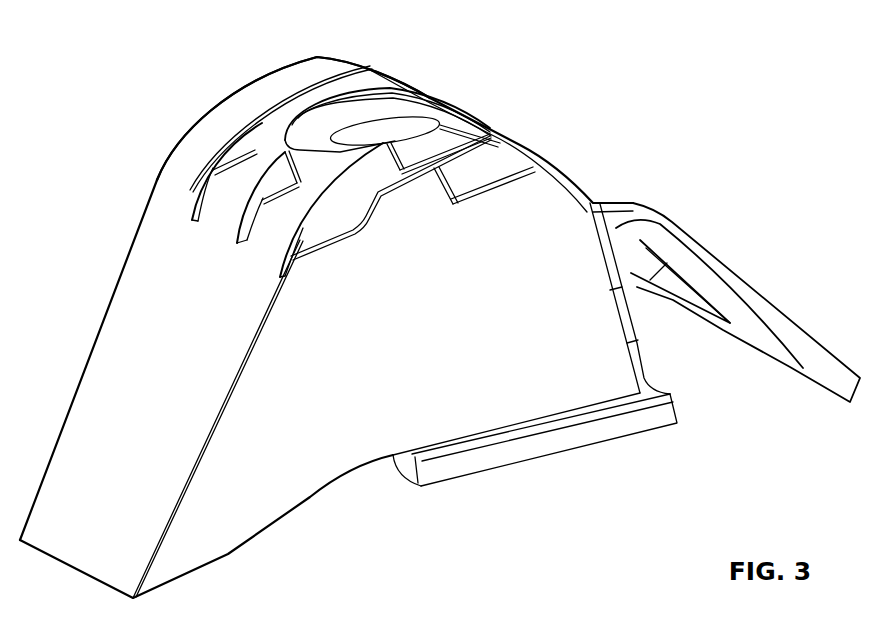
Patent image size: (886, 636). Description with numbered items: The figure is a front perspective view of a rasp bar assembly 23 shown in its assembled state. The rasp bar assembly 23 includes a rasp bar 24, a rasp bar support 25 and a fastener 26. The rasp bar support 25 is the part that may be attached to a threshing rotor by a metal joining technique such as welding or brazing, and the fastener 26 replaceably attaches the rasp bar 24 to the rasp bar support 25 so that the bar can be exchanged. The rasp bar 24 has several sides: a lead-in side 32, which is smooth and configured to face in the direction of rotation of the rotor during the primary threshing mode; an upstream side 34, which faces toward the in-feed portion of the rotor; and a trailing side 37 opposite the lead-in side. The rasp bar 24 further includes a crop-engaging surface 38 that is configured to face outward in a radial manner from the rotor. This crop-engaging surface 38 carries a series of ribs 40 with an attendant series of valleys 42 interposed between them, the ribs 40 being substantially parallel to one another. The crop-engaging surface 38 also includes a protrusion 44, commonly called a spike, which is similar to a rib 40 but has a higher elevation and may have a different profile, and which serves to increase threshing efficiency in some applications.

The rasp bar assembly 23 is at (500, 55).
The rasp bar 24 is at (186, 125).
The rasp bar support 25 is at (622, 203).
The fastener 26 is at (412, 124).
The lead-in side 32 is at (98, 360).
The upstream side 34 is at (445, 358).
The trailing side 37 is at (565, 177).
The crop-engaging surface 38 is at (303, 72).
The ribs 40 is at (220, 215).
The valleys 42 is at (267, 143).
The protrusion 44 is at (213, 128).